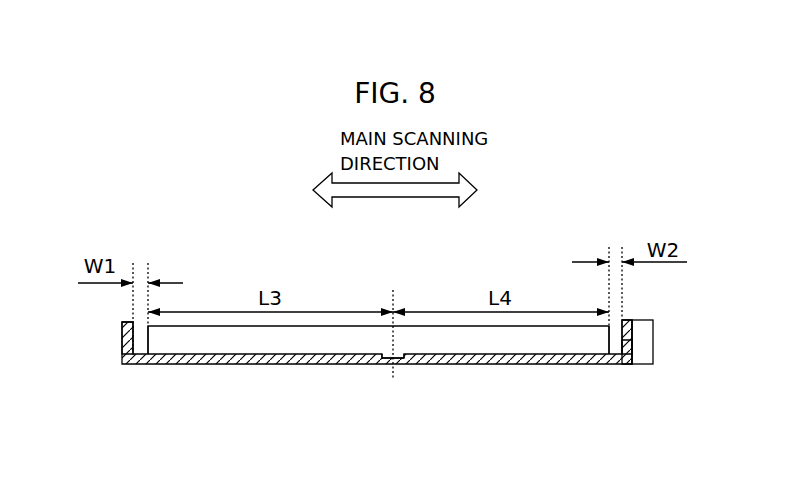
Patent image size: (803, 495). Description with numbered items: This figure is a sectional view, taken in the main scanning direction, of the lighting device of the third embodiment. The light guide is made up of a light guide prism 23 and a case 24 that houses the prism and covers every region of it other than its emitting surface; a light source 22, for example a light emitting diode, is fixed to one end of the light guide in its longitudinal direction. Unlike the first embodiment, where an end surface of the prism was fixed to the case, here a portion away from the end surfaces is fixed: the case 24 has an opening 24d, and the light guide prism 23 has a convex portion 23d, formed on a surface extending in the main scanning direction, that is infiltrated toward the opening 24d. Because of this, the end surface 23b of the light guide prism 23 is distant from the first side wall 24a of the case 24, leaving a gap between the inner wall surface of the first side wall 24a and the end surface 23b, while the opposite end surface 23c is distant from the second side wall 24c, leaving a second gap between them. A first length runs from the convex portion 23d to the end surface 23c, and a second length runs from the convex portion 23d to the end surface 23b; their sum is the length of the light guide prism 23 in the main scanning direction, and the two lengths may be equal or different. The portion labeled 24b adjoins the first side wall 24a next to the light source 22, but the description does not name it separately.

The light source 22 is at (648, 330).
The light guide prism 23 is at (232, 337).
The end surface 23b is at (605, 347).
The end surface 23c is at (148, 340).
The convex portion 23d is at (397, 363).
The case 24 is at (303, 357).
The first side wall 24a is at (628, 322).
The lower right portion of base plate 24b is at (634, 345).
The second side wall 24c is at (122, 332).
The opening 24d is at (372, 363).